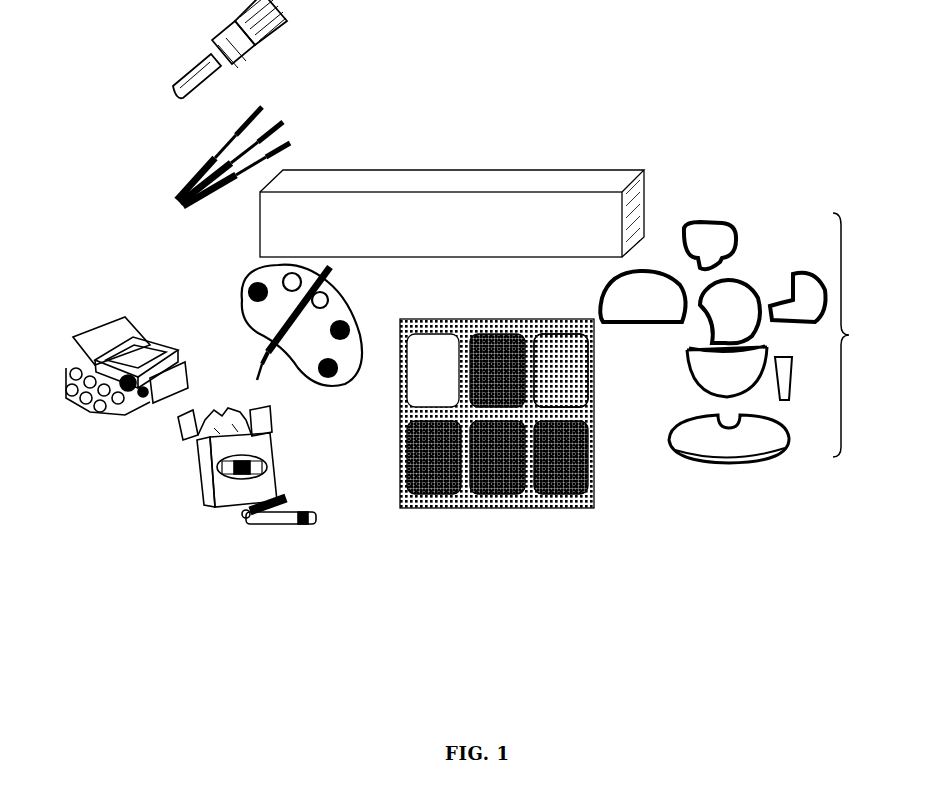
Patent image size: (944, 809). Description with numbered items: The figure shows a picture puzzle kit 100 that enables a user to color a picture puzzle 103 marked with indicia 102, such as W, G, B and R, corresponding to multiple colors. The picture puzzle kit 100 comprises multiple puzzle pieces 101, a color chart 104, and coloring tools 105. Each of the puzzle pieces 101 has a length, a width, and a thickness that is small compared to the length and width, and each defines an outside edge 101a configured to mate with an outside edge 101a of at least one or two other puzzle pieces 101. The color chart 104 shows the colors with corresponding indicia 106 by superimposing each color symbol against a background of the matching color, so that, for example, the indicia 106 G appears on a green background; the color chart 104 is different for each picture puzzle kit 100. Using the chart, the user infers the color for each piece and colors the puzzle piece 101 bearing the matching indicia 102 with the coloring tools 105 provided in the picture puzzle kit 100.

The picture puzzle kit 100 is at (541, 95).
The puzzle pieces 101 is at (793, 305).
The outside edge 101a is at (686, 364).
The indicia 102 is at (812, 294).
The picture puzzle 103 is at (849, 335).
The color chart 104 is at (530, 449).
The coloring tools 105 is at (223, 404).
The indicia 106 is at (552, 476).